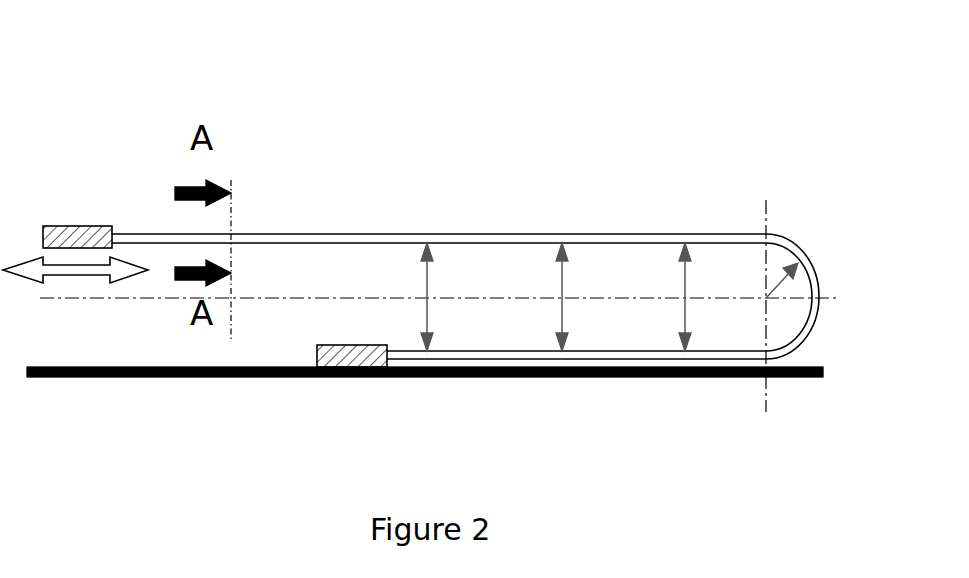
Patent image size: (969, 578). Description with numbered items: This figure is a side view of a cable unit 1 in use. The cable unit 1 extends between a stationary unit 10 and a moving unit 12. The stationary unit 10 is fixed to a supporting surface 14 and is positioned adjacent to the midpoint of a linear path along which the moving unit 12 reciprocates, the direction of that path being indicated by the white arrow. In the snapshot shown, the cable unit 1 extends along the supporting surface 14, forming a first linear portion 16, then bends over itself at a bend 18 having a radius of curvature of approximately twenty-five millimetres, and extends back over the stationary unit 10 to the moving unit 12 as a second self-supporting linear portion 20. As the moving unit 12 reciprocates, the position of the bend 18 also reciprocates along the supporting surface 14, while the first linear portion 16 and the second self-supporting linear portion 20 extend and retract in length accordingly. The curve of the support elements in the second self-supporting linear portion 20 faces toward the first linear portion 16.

The cable unit 1 is at (660, 145).
The stationary unit 10 is at (341, 377).
The moving unit 12 is at (70, 226).
The supporting surface 14 is at (182, 378).
The first linear portion 16 is at (765, 417).
The bend 18 is at (803, 352).
The second self-supporting linear portion 20 is at (760, 117).